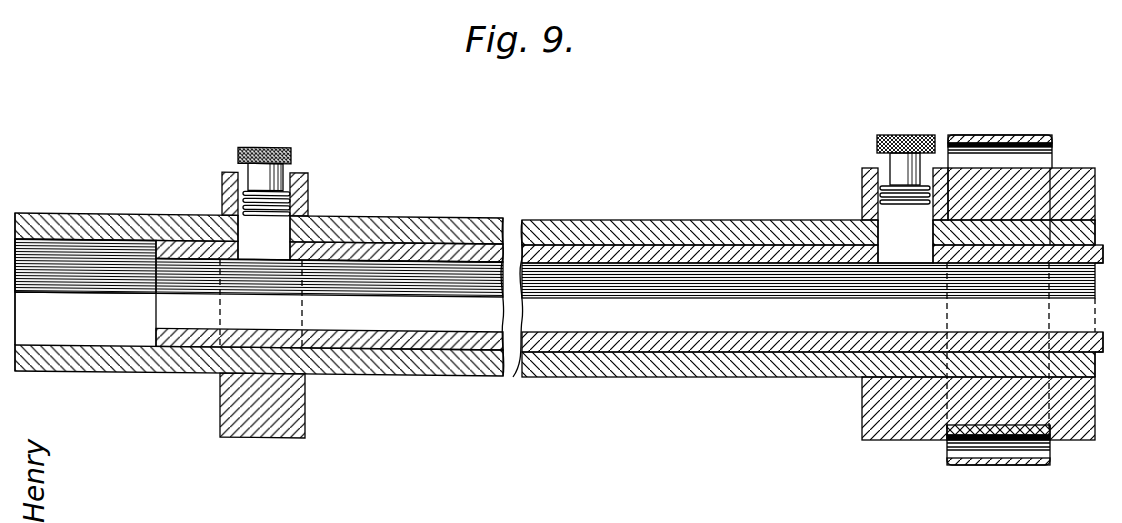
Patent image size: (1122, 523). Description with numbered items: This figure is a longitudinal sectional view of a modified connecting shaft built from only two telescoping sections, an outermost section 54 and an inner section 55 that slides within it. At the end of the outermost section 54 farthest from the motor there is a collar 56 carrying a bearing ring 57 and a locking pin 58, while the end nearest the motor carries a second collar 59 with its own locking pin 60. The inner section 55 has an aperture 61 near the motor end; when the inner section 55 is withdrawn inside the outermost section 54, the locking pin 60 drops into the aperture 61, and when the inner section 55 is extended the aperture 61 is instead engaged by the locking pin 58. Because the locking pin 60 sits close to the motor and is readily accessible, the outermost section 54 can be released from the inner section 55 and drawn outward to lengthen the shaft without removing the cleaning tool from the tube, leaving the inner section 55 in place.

The outermost shaft section 54 is at (398, 208).
The inner shaft section 55 is at (437, 343).
The collar 56 is at (1055, 182).
The bearing ring 57 is at (993, 135).
The locking pin 58 is at (893, 238).
The collar 59 is at (309, 186).
The locking pin 60 is at (222, 178).
The aperture 61 is at (218, 257).